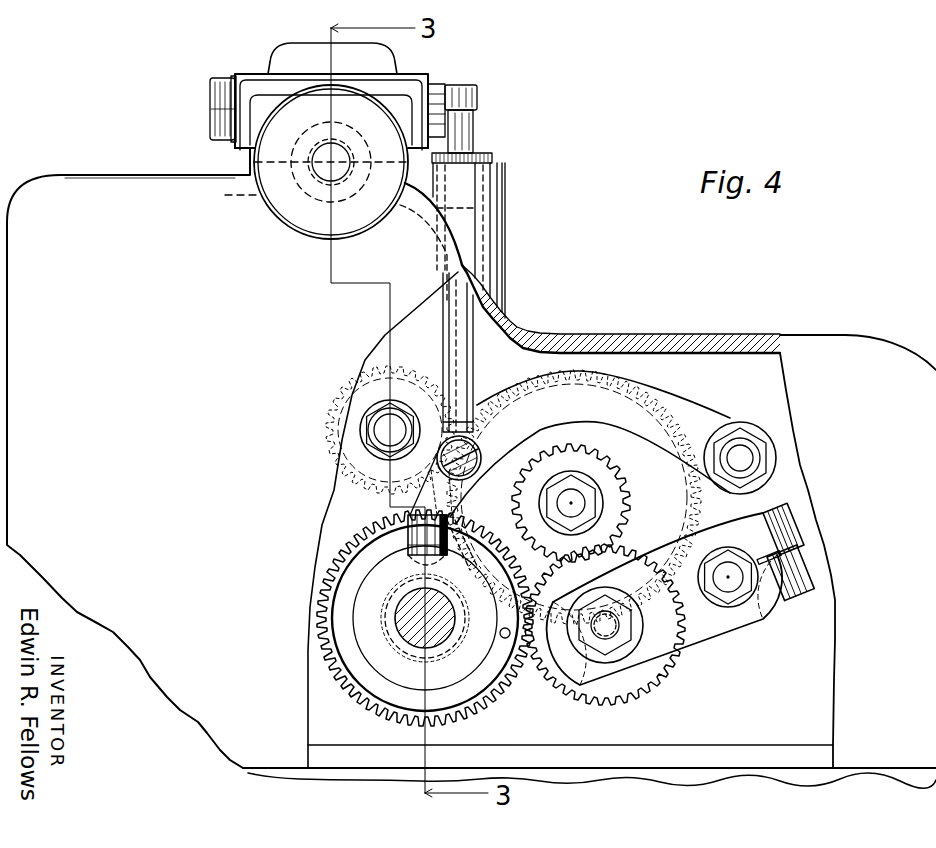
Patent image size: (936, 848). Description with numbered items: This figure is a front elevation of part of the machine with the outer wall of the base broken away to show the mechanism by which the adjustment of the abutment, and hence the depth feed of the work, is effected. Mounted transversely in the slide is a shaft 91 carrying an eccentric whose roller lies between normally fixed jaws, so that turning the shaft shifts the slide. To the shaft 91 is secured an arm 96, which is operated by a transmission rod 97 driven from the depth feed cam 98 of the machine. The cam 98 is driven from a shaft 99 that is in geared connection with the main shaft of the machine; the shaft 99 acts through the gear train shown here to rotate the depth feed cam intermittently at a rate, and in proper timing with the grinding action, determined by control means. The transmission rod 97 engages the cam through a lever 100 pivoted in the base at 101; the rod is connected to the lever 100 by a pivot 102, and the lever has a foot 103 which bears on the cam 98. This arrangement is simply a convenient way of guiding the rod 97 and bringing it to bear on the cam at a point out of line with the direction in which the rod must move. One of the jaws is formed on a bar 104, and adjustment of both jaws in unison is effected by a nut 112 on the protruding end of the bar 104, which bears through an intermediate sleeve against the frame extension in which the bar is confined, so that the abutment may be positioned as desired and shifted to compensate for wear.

The shaft 91 is at (210, 112).
The arm 96 is at (456, 90).
The transmission rod 97 is at (467, 363).
The depth feed cam 98 is at (378, 585).
The shaft 99 is at (380, 432).
The lever 100 is at (567, 377).
The pivot 101 is at (745, 450).
The pivot 102 is at (474, 457).
The foot 103 is at (425, 588).
The bar 104 is at (318, 165).
The nut 112 is at (305, 217).